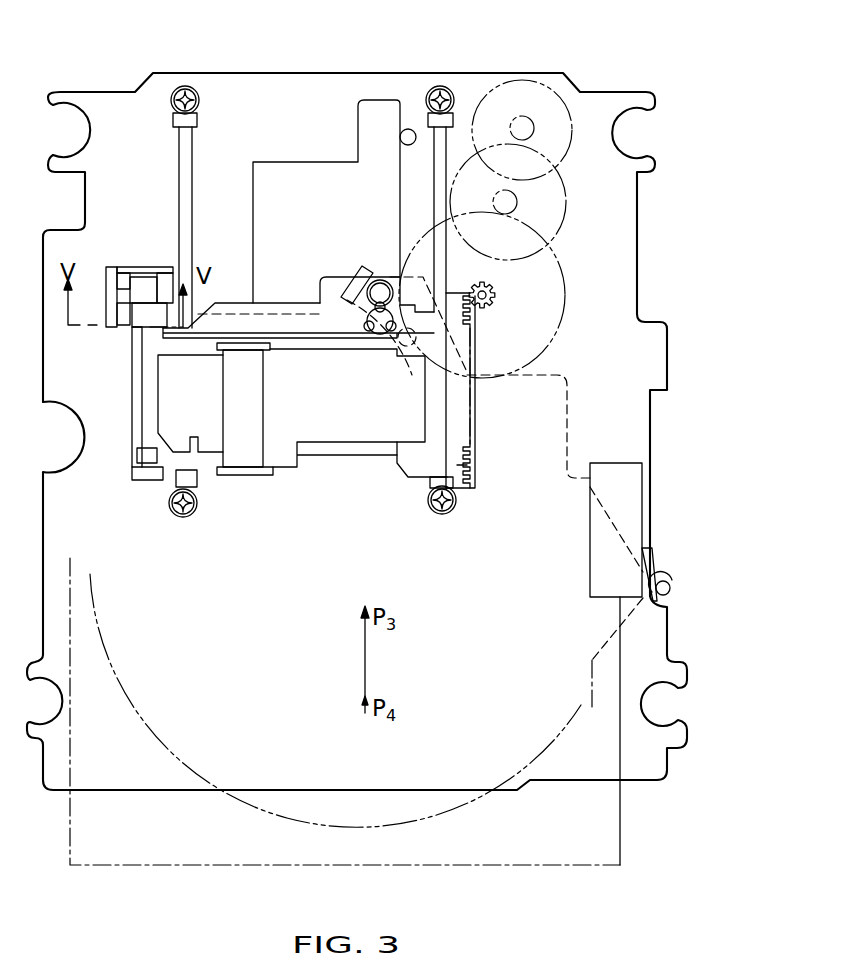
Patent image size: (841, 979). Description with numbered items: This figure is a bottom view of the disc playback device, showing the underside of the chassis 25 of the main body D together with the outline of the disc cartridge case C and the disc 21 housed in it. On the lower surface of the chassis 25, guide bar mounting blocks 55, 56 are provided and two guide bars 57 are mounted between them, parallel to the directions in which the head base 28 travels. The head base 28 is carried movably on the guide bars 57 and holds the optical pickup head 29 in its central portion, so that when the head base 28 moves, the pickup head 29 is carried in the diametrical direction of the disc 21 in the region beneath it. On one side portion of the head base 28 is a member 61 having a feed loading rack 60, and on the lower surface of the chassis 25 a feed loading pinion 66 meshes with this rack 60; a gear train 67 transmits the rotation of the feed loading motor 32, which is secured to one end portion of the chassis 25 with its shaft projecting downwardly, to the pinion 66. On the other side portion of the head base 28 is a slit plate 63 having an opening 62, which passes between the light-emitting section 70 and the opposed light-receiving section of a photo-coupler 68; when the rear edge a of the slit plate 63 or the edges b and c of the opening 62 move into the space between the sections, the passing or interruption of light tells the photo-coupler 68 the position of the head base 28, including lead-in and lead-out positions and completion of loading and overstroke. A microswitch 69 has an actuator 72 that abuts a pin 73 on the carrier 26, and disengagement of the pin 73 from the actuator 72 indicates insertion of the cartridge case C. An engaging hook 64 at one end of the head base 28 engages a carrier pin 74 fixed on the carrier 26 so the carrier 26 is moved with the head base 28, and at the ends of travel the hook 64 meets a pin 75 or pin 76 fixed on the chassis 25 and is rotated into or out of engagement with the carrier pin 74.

The disc 21 is at (242, 800).
The chassis 25 is at (653, 427).
The carrier 26 is at (315, 305).
The head base 28 is at (232, 303).
The optical pickup head 29 is at (348, 460).
The feed loading motor 32 is at (562, 98).
The guide bar mounting blocks 55 is at (198, 127).
The guide bar mounting blocks 56 is at (198, 483).
The guide bars 57 is at (178, 182).
The feed loading rack 60 is at (478, 440).
The member having feed loading rack 61 is at (475, 466).
The opening 62 is at (133, 463).
The slit plate 63 is at (138, 385).
The engaging hook 64 is at (352, 272).
The feed loading pinion 66 is at (496, 295).
The gear train 67 is at (552, 248).
The photo-coupler 68 is at (120, 268).
The microswitch 69 is at (590, 580).
The light-emitting section 70 is at (146, 277).
The actuator 72 is at (654, 566).
The pin 73 is at (676, 589).
The carrier pin 74 is at (380, 282).
The pin 75 is at (402, 142).
The pin 76 is at (404, 346).
The main body D is at (528, 72).
The disc cartridge case C is at (625, 830).
The rear edge of slit plate a is at (164, 270).
The edge of opening b is at (147, 449).
The edge of opening c is at (152, 464).